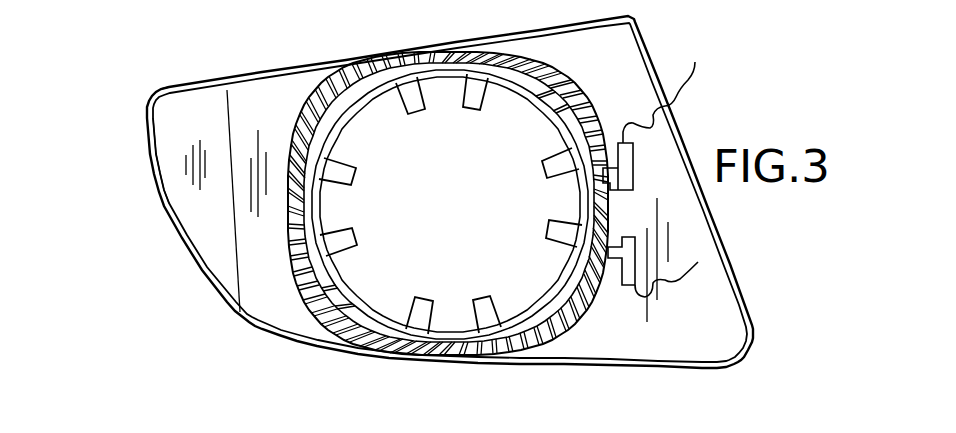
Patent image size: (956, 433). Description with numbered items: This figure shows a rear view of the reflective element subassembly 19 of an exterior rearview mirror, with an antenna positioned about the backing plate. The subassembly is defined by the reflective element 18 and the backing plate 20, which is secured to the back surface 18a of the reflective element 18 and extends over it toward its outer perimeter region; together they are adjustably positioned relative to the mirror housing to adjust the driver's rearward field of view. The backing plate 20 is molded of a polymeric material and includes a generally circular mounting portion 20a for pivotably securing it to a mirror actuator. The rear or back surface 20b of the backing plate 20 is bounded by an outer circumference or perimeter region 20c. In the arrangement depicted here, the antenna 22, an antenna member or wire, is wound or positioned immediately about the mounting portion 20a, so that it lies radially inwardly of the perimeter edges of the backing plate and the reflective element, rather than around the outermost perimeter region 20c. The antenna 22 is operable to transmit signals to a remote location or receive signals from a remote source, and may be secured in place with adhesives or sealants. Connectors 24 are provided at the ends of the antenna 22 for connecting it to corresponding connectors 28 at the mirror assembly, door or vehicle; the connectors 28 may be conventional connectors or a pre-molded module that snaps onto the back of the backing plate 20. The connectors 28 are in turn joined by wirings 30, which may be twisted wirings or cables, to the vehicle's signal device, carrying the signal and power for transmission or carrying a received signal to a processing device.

The reflective element 18 is at (147, 117).
The back surface of reflective element 18a is at (157, 198).
The reflective element subassembly 19 is at (172, 74).
The backing plate 20 is at (243, 307).
The mounting portion 20a is at (556, 80).
The back surface of backing plate 20b is at (252, 260).
The perimeter region of backing plate 20c is at (267, 93).
The antenna 22 is at (553, 63).
The connector 24 is at (602, 181).
The connector 28 is at (632, 165).
The wirings 30 is at (688, 84).